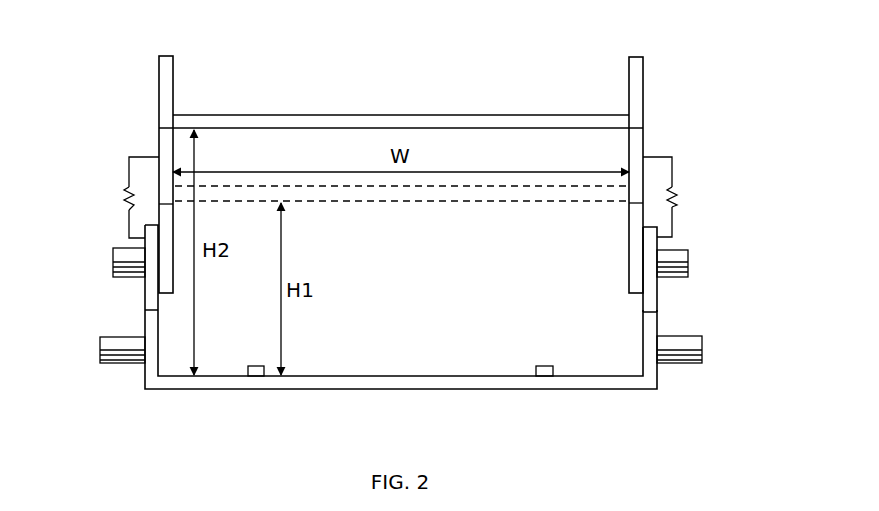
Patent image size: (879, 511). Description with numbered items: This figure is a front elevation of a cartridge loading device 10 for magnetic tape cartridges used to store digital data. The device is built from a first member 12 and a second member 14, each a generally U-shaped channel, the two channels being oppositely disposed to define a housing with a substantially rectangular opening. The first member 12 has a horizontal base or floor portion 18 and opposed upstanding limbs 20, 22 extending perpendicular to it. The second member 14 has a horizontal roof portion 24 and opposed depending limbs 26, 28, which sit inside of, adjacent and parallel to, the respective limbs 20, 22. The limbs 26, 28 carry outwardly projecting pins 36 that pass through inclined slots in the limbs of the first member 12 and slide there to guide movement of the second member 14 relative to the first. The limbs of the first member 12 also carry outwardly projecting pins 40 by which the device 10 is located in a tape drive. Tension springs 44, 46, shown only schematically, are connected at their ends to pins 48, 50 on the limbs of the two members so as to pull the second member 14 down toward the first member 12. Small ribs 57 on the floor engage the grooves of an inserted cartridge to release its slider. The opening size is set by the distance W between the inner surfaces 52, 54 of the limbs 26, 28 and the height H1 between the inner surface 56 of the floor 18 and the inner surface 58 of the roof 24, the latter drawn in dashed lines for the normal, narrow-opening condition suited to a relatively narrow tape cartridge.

The cartridge loading device 10 is at (722, 211).
The first member 12 is at (585, 399).
The second member 14 is at (565, 90).
The base or floor portion 18 is at (400, 389).
The upstanding limb 20 is at (657, 300).
The upstanding limb 22 is at (145, 300).
The upper or roof portion 24 is at (400, 115).
The depending limb 26 is at (643, 130).
The depending limb 28 is at (159, 129).
The outwardly projecting pin 36 is at (113, 264).
The outwardly projecting pin 40 is at (100, 350).
The tension spring 44 is at (672, 173).
The tension spring 46 is at (129, 172).
The pin 48 is at (129, 238).
The pin 50 is at (129, 157).
The inner surface 52 is at (629, 158).
The inner surface 54 is at (173, 152).
The inner surface of the floor 56 is at (400, 376).
The rib 57 is at (256, 366).
The inner surface of the roof 58 is at (505, 132).